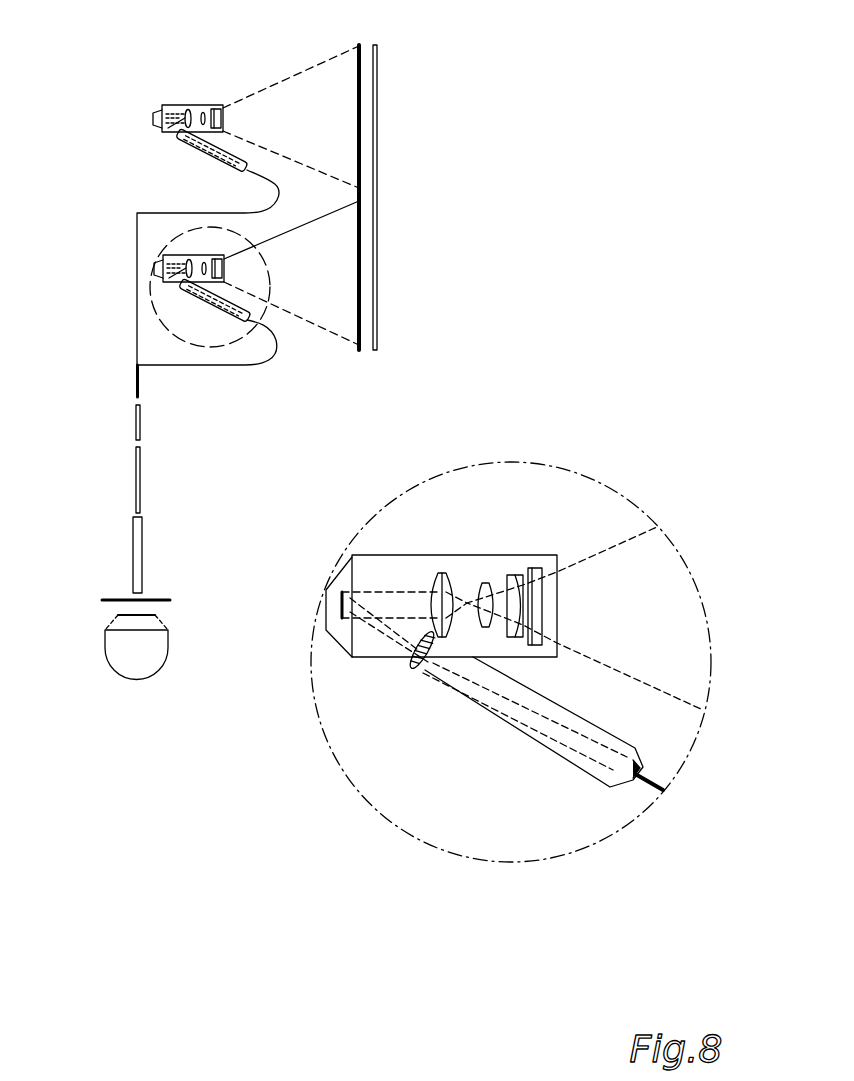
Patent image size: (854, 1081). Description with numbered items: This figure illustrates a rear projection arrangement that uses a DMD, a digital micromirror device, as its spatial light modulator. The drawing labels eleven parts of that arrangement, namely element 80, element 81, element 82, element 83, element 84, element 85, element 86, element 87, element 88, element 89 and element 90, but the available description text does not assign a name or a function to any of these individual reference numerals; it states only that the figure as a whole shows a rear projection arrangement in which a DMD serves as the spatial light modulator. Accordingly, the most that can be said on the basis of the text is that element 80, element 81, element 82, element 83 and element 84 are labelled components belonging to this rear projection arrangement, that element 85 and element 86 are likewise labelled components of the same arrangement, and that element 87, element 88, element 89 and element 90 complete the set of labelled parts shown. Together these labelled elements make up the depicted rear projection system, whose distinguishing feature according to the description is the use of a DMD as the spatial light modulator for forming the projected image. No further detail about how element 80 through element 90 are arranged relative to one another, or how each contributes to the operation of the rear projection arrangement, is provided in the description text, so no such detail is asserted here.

The light source lamp 80 is at (168, 653).
The condenser aperture 81 is at (150, 610).
The filter plate 82 is at (153, 595).
The fiber bundle 83 is at (142, 540).
The optical fiber 84 is at (140, 462).
The light guide probe 85 is at (207, 318).
The prism 86 is at (418, 677).
The detector surface 87 is at (343, 610).
The lens system 88 is at (445, 573).
The screen 89 is at (358, 99).
The back plate 90 is at (378, 80).